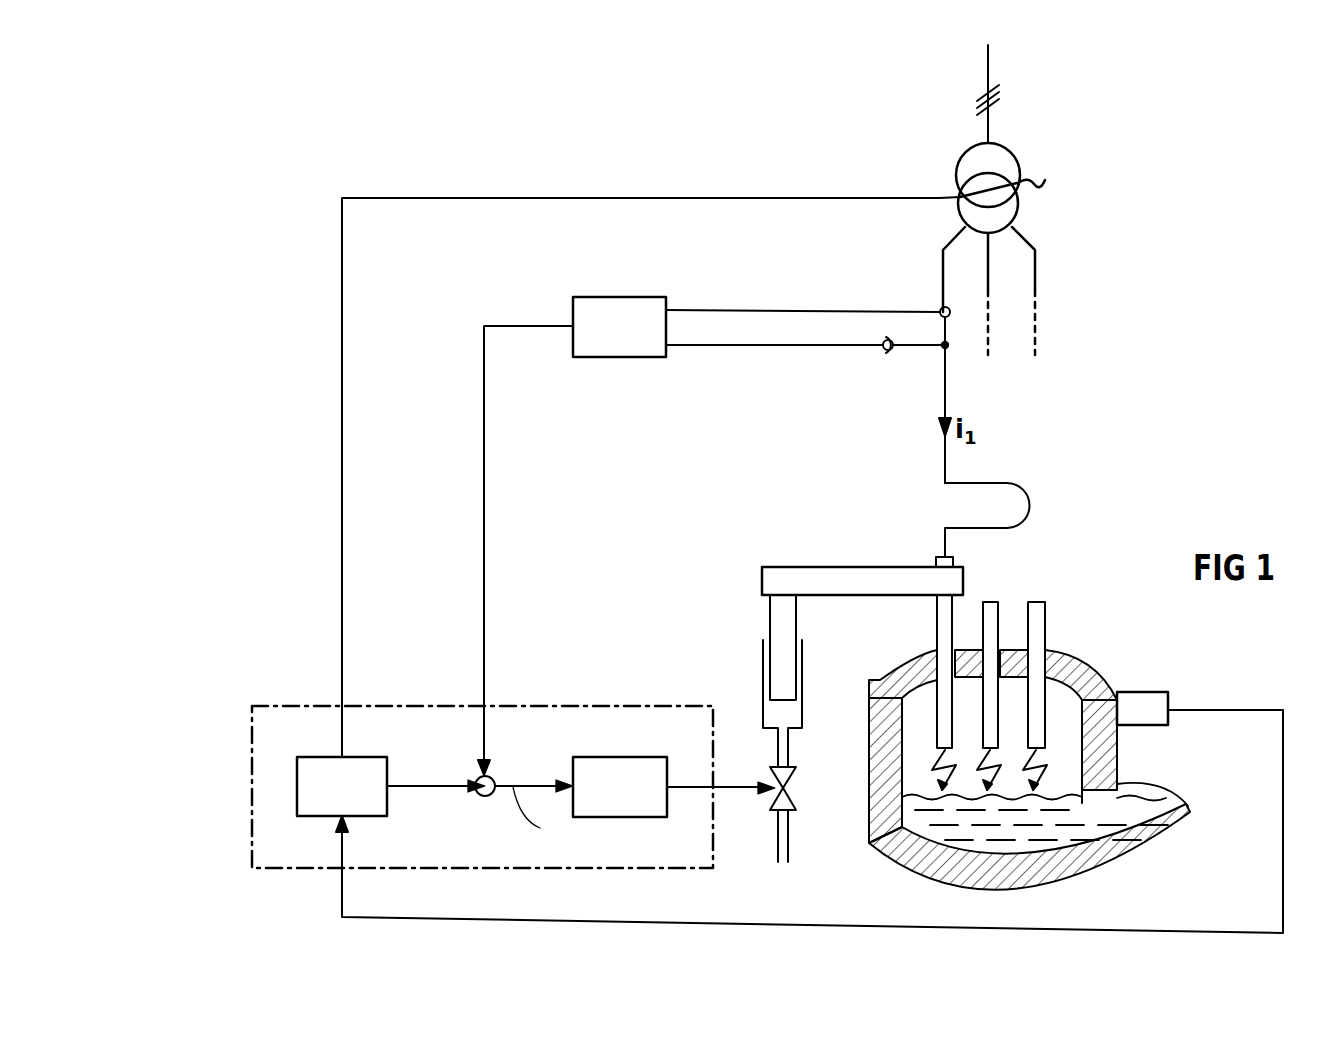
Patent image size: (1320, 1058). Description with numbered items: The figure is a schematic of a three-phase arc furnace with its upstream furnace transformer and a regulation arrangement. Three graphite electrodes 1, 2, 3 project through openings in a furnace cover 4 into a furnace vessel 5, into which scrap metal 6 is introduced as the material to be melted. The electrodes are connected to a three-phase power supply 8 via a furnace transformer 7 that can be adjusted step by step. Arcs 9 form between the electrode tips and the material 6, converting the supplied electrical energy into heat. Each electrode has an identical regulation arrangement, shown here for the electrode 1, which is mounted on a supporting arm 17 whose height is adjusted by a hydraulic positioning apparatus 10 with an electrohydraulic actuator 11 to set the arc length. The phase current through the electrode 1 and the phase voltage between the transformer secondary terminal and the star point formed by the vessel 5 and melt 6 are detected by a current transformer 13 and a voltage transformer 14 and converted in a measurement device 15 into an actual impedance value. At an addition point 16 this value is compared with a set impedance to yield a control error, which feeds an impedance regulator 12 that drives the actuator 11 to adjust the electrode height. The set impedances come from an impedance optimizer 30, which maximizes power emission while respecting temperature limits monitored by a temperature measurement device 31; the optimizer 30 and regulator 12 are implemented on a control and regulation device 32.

The graphite electrode 1 is at (937, 630).
The graphite electrode 2 is at (990, 632).
The graphite electrode 3 is at (1040, 640).
The furnace cover 4 is at (890, 675).
The furnace vessel 5 is at (888, 752).
The scrap metal 6 is at (1070, 825).
The furnace transformer 7 is at (962, 170).
The three-phase power supply 8 is at (986, 74).
The arcs 9 is at (1045, 770).
The hydraulic positioning apparatus 10 is at (762, 710).
The electrohydraulic actuator 11 is at (796, 800).
The impedance regulator 12 is at (630, 817).
The current transformer 13 is at (940, 306).
The voltage transformer 14 is at (884, 352).
The measurement device 15 is at (615, 360).
The addition point 16 is at (485, 796).
The supporting arm 17 is at (858, 582).
The impedance optimizer 30 is at (297, 785).
The temperature measurement device 31 is at (1150, 692).
The control and regulation device 32 is at (250, 820).